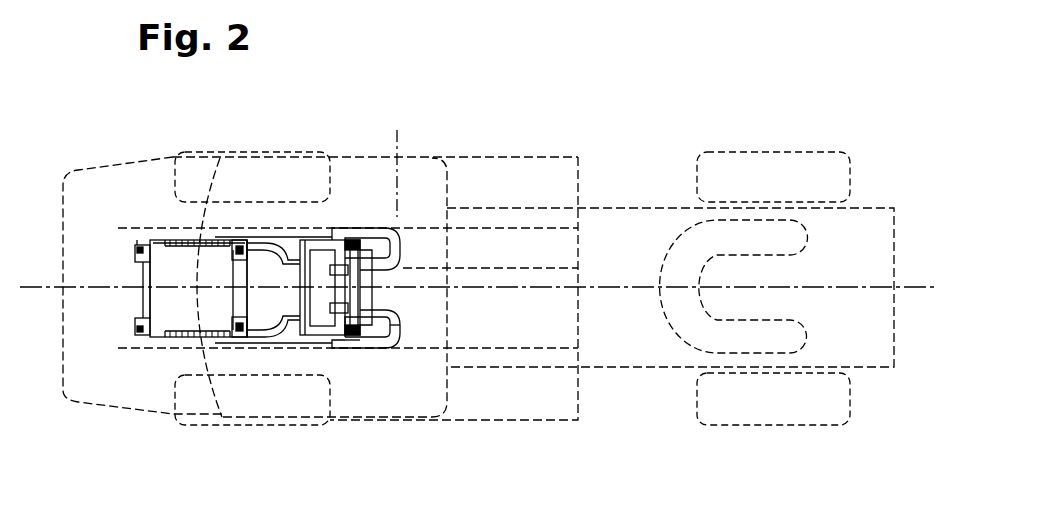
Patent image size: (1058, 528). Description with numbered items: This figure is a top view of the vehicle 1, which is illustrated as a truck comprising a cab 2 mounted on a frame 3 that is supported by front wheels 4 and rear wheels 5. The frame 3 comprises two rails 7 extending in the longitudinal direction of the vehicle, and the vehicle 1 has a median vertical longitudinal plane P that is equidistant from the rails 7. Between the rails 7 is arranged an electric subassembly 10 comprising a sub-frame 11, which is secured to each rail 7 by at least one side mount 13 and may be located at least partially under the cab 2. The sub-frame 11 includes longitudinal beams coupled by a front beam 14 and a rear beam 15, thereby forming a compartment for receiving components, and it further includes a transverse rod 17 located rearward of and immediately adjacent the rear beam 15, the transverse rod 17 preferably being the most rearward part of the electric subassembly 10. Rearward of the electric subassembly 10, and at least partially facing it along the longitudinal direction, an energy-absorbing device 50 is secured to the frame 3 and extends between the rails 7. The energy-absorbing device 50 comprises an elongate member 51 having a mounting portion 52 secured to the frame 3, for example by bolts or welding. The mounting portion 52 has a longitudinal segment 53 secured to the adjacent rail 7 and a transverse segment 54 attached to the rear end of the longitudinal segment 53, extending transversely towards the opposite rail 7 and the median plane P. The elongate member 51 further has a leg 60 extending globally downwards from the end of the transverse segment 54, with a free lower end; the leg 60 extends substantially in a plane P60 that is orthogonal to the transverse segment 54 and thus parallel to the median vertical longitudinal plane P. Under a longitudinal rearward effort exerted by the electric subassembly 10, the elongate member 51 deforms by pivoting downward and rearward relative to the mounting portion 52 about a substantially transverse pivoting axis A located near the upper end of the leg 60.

The vehicle 1 is at (88, 148).
The cab 2 is at (330, 430).
The frame 3 is at (510, 227).
The front wheels 4 is at (207, 168).
The rear wheels 5 is at (800, 167).
The rails 7 is at (540, 227).
The electric subassembly 10 is at (132, 272).
The sub-frame 11 is at (173, 240).
The side mount 13 is at (345, 240).
The front beam 14 is at (143, 305).
The rear beam 15 is at (276, 245).
The transverse rod 17 is at (373, 280).
The energy-absorbing device 50 is at (367, 220).
The elongate member 51 is at (357, 355).
The mounting portion 52 is at (440, 462).
The longitudinal segment 53 is at (372, 347).
The transverse segment 54 is at (402, 337).
The leg 60 is at (415, 299).
The pivoting axis A is at (397, 185).
The median vertical longitudinal plane P is at (922, 287).
The plane P60 is at (490, 268).